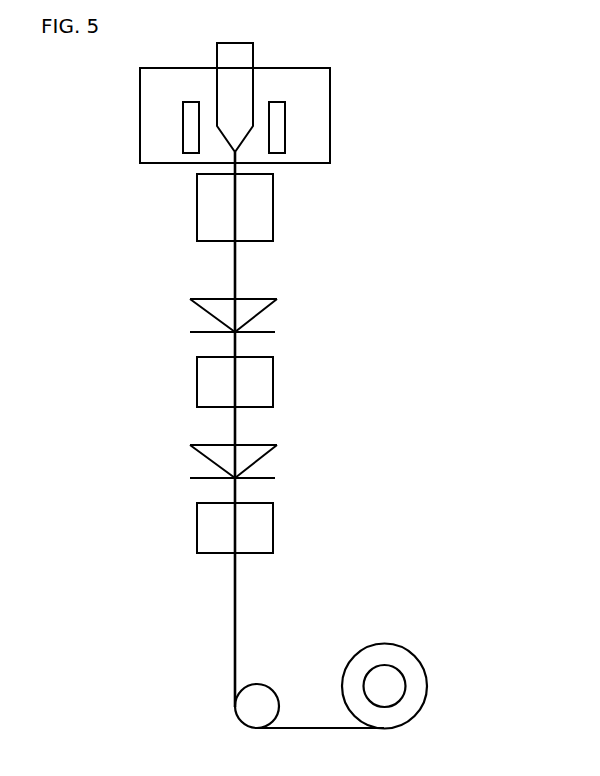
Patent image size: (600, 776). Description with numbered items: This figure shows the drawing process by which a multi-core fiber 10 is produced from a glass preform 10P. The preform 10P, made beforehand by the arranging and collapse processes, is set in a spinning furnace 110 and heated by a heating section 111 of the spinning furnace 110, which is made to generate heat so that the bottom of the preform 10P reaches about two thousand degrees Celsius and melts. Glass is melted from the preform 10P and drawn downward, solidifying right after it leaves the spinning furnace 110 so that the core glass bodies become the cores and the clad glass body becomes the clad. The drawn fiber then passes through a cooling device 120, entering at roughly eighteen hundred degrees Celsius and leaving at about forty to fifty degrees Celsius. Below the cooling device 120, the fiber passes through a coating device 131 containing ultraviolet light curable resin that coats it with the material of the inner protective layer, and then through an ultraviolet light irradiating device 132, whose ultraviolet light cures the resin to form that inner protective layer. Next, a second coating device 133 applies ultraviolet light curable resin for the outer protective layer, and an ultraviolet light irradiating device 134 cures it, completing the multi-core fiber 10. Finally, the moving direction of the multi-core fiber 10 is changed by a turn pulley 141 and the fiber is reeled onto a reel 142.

The multi-core fiber 10 is at (235, 616).
The preform 10P is at (236, 100).
The spinning furnace 110 is at (330, 83).
The heating section 111 is at (275, 129).
The cooling device 120 is at (252, 224).
The coating device 131 is at (248, 307).
The ultraviolet light irradiating device 132 is at (248, 371).
The coating device 133 is at (248, 452).
The ultraviolet light irradiating device 134 is at (248, 515).
The turn pulley 141 is at (252, 696).
The reel 142 is at (382, 685).